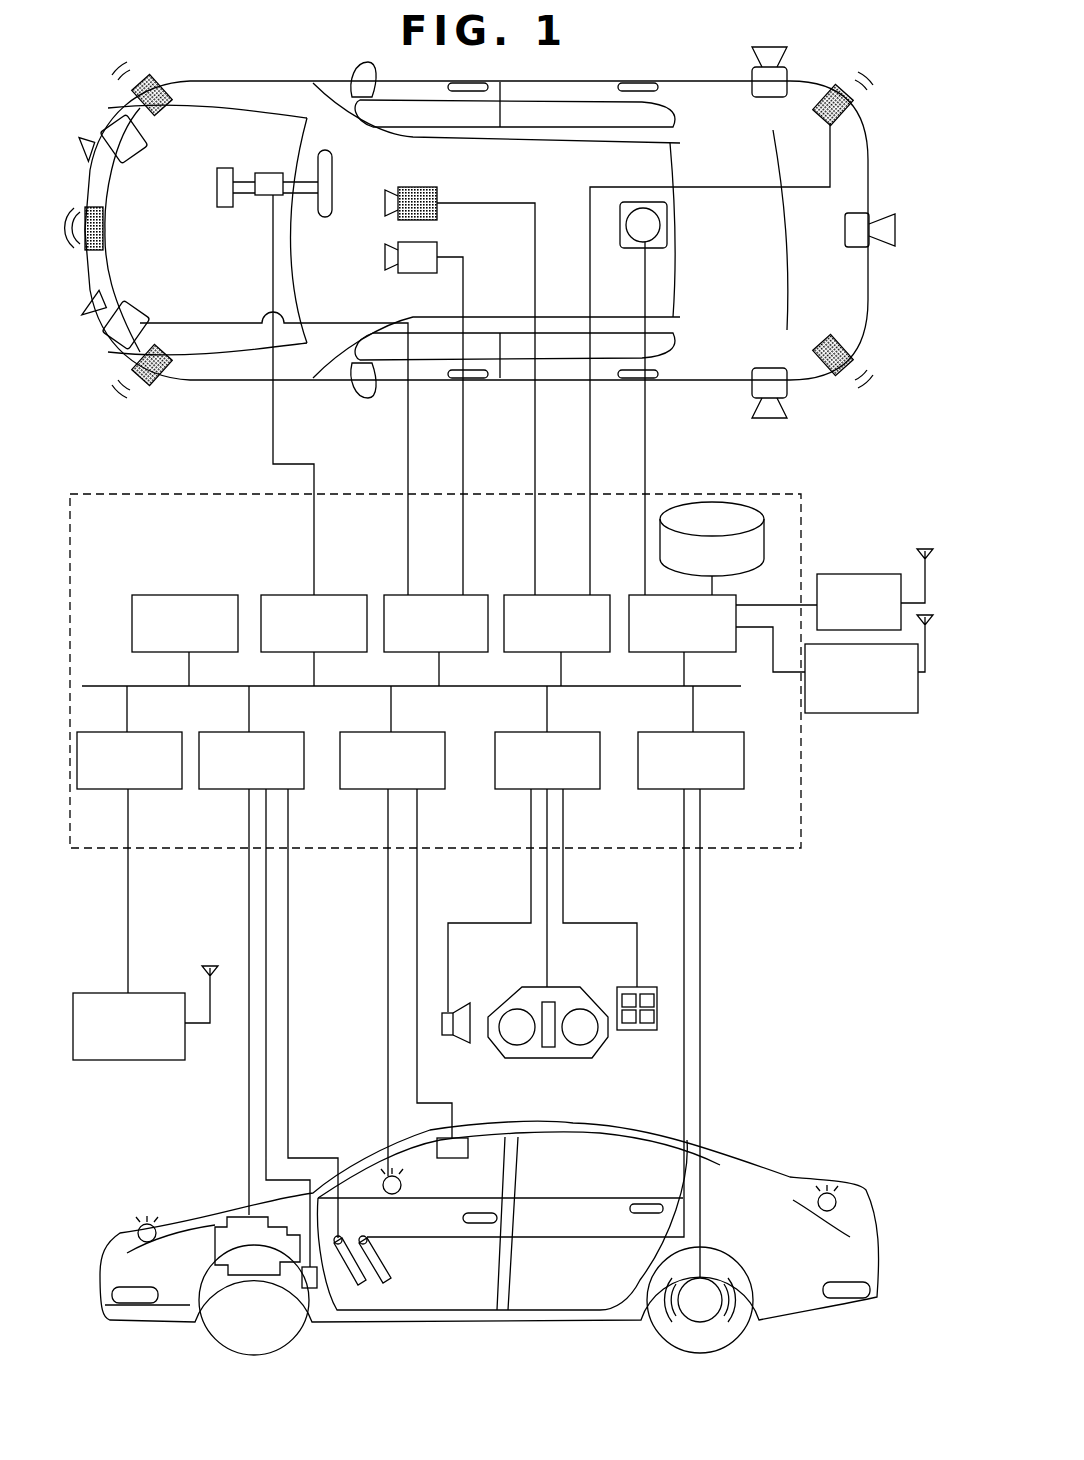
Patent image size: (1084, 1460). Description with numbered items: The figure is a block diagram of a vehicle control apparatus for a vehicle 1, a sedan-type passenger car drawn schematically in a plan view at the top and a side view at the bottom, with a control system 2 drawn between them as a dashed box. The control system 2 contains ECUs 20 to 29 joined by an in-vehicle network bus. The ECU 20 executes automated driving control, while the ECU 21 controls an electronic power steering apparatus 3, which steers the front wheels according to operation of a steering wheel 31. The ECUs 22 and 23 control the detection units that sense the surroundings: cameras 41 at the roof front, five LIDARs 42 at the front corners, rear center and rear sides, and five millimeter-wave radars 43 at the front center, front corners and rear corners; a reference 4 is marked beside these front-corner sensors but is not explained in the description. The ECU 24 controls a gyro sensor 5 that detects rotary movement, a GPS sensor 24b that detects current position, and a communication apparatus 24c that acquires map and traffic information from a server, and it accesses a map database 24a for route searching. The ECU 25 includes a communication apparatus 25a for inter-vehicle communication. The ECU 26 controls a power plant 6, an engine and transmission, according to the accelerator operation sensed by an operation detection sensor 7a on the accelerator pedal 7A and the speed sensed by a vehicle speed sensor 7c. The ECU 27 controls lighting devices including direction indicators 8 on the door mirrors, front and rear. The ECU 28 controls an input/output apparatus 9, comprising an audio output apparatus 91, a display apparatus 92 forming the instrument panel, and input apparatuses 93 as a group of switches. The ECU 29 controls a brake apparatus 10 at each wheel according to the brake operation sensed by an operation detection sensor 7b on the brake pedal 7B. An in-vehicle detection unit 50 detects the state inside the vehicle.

The vehicle 1 is at (872, 141).
The control system 2 is at (777, 848).
The electronic power steering apparatus 3 is at (225, 207).
The sensor system 4 is at (112, 86).
The gyro sensor 5 is at (667, 224).
The power plant 6 is at (218, 1215).
The operation detection sensor 7a is at (340, 1236).
The accelerator pedal 7A is at (366, 1283).
The operation detection sensor 7b is at (368, 1238).
The brake pedal 7B is at (392, 1270).
The vehicle speed sensor 7c is at (312, 1290).
The direction indicators 8 is at (138, 1230).
The input/output apparatus 9 is at (518, 1063).
The brake apparatus 10 is at (702, 1322).
The ECU 20 is at (218, 595).
The ECU 21 is at (345, 595).
The ECU 22 is at (434, 595).
The ECU 23 is at (559, 595).
The ECU 24 is at (622, 595).
The database 24a is at (710, 502).
The GPS sensor 24b is at (874, 574).
The communication apparatus 24c is at (865, 713).
The ECU 25 is at (157, 789).
The communication apparatus 25a is at (128, 1060).
The ECU 26 is at (226, 789).
The ECU 27 is at (362, 789).
The ECU 28 is at (590, 789).
The ECU 29 is at (729, 789).
The steering wheel 31 is at (325, 217).
The camera 41 is at (437, 212).
The LIDAR 42 is at (136, 158).
The millimeter-wave radar 43 is at (163, 83).
The in-vehicle detection unit 50 is at (468, 1160).
The audio output apparatus 91 is at (445, 1035).
The display apparatus 92 is at (510, 998).
The input apparatuses 93 is at (632, 1030).